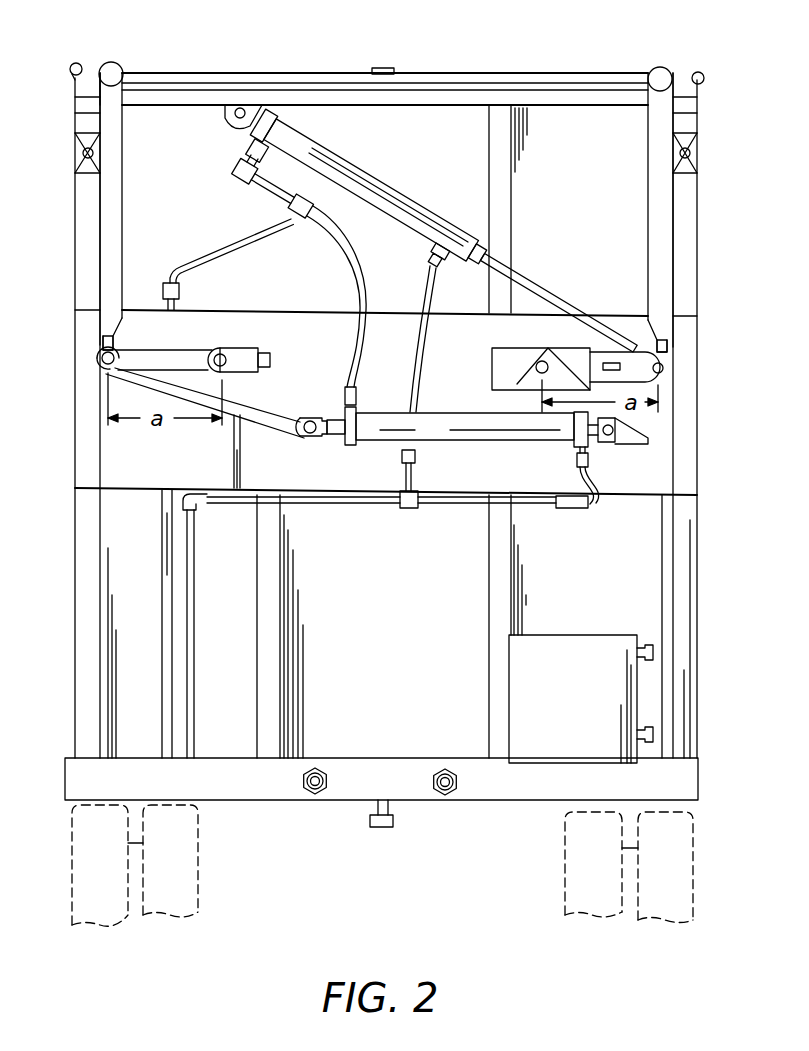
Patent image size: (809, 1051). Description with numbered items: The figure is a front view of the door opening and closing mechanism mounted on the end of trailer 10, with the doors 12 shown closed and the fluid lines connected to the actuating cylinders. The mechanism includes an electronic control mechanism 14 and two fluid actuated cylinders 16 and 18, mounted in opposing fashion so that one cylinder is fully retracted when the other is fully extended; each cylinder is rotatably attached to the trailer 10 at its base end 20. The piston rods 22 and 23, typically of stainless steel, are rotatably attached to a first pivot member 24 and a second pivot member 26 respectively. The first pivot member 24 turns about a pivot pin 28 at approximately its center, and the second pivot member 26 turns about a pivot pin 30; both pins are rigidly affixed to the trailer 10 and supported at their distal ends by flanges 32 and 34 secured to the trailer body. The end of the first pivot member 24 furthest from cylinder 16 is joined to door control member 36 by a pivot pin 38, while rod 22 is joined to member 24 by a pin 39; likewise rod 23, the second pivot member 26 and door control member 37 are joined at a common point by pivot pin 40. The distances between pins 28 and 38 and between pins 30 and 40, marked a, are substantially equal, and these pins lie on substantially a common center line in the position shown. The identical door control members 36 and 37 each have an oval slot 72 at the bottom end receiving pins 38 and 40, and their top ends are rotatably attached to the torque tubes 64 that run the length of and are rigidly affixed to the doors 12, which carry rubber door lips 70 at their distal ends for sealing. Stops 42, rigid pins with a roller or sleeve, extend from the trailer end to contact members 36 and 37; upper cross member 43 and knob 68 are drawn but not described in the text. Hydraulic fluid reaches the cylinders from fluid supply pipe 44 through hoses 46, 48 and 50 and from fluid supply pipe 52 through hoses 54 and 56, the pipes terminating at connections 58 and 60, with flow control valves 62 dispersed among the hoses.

The trailer 10 is at (704, 608).
The doors 12 is at (240, 80).
The electronic control mechanism 14 is at (552, 709).
The fluid actuated cylinder 16 is at (478, 445).
The fluid actuated cylinder 18 is at (365, 170).
The base end 20 is at (250, 108).
The piston rod 22 is at (344, 442).
The piston rod 23 is at (533, 290).
The first pivot member 24 is at (270, 398).
The second pivot member 26 is at (578, 352).
The pivot pin 28 is at (222, 355).
The pivot pin 30 is at (538, 373).
The flange 32 is at (260, 353).
The flange 34 is at (495, 371).
The door control member 36 is at (100, 228).
The door control member 37 is at (675, 222).
The pivot pin 38 is at (100, 360).
The pin 39 is at (304, 434).
The pivot pin 40 is at (665, 368).
The stops 42 is at (83, 153).
The upper cross beam 43 is at (567, 93).
The fluid supply pipe 44 is at (165, 596).
The hose 46 is at (218, 262).
The hose 48 is at (255, 199).
The hose 50 is at (365, 266).
The fluid supply pipe 52 is at (190, 608).
The hose 54 is at (410, 361).
The hose 56 is at (590, 512).
The connection 58 is at (322, 800).
The connection 60 is at (448, 801).
The flow control valve 62 is at (254, 152).
The torque tube 64 is at (120, 66).
The small knob 68 is at (79, 62).
The rubber door lip 70 is at (376, 68).
The slot 72 is at (107, 338).